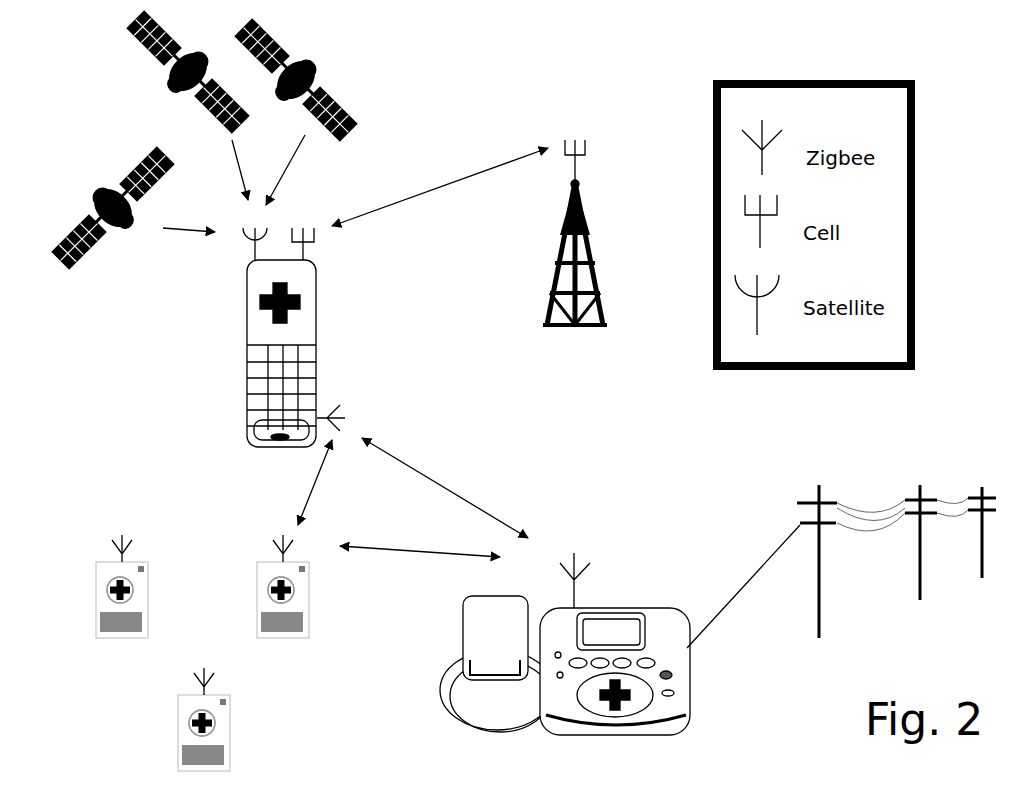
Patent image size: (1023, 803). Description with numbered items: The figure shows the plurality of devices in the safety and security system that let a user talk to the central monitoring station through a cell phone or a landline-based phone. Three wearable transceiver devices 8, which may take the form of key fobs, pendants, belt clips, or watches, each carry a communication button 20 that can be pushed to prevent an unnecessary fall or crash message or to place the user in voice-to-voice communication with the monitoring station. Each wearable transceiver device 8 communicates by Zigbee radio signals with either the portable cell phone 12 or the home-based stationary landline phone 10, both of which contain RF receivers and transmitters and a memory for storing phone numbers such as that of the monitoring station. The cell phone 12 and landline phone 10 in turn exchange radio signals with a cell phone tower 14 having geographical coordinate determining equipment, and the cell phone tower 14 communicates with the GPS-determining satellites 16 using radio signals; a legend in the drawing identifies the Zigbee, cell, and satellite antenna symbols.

The wearable transceiver device 8 is at (97, 590).
The home-based stationary land-line based phone 10 is at (690, 697).
The portable cell phone 12 is at (247, 344).
The cell phone tower 14 is at (560, 232).
The GPS-determining satellite 16 is at (173, 79).
The communication button 20 is at (108, 600).